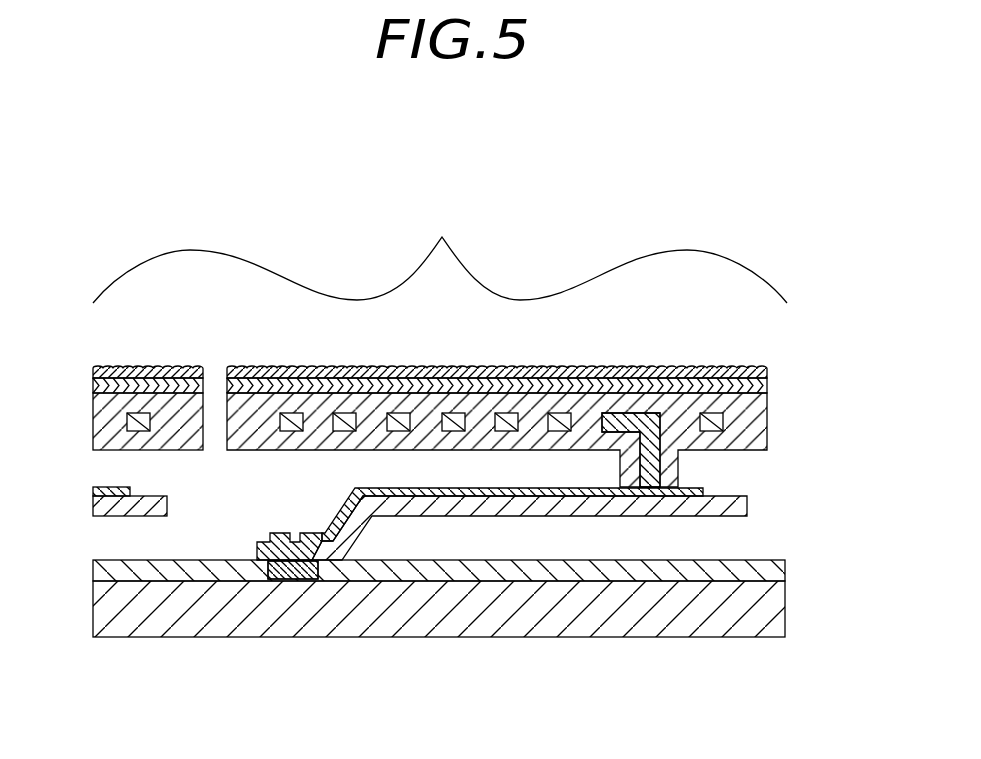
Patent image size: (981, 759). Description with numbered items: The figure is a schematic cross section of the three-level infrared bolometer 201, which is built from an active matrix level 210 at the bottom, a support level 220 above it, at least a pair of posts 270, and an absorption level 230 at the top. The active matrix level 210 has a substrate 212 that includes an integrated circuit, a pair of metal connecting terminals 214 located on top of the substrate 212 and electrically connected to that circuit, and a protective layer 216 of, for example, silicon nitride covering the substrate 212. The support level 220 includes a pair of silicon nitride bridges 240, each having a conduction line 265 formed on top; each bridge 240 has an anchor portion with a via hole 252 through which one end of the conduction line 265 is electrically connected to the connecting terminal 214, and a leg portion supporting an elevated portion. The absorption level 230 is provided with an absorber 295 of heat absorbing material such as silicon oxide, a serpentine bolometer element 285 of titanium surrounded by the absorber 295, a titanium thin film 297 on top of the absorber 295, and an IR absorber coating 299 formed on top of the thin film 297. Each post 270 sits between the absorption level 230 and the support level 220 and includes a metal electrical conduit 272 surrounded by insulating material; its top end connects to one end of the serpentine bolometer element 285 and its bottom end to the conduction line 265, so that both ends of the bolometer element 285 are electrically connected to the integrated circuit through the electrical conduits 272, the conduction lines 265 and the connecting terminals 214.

The bolometer 201 is at (440, 252).
The active matrix level 210 is at (91, 560).
The substrate 212 is at (773, 617).
The connecting terminal 214 is at (292, 572).
The protective layer 216 is at (775, 575).
The support level 220 is at (91, 487).
The absorption level 230 is at (91, 366).
The bridge 240 is at (735, 508).
The via hole 252 is at (296, 537).
The conduction line 265 is at (707, 491).
The post 270 is at (91, 450).
The electrical conduit 272 is at (633, 467).
The serpentine bolometer element 285 is at (723, 421).
The absorber 295 is at (752, 438).
The thin film 297 is at (752, 383).
The IR absorber coating 299 is at (719, 370).